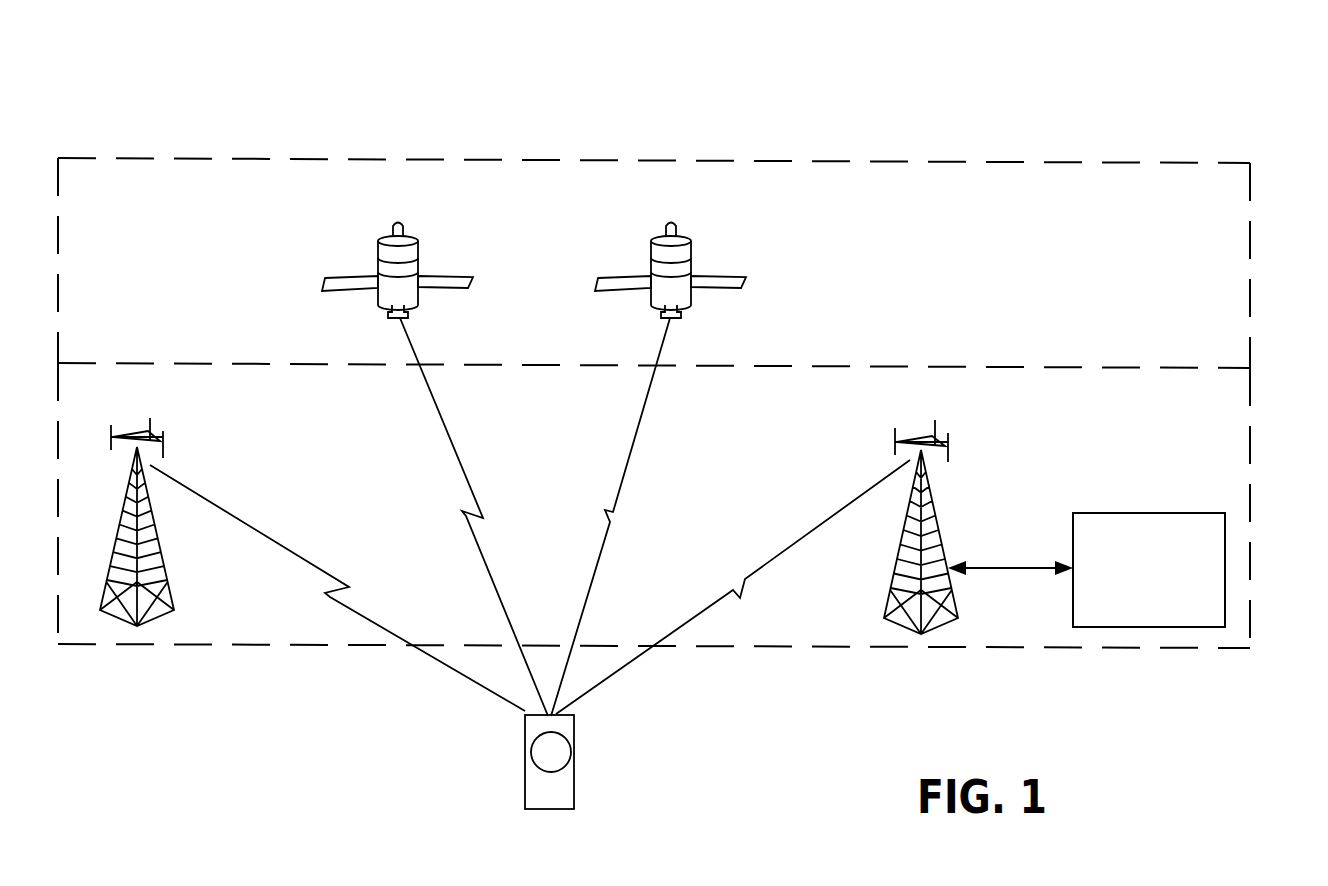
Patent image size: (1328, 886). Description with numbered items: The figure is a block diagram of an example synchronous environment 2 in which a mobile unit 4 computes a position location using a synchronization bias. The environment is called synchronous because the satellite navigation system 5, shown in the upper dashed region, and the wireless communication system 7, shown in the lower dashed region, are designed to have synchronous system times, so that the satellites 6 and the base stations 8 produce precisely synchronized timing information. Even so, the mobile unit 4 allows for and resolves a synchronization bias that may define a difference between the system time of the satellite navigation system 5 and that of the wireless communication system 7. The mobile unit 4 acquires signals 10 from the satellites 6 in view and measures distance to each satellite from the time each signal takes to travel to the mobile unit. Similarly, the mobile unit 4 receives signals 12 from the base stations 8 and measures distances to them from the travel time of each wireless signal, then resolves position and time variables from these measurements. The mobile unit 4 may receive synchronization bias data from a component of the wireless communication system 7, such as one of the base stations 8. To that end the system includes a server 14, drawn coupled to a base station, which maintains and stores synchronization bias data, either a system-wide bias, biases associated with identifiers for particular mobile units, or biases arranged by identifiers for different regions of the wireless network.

The synchronous environment 2 is at (1257, 70).
The mobile unit 4 is at (574, 751).
The satellite navigation system 5 is at (1254, 240).
The satellites 6 is at (406, 229).
The wireless communication system 7 is at (1254, 436).
The base stations 8 is at (166, 456).
The signals 10 is at (417, 356).
The signals 12 is at (311, 562).
The server 14 is at (1163, 598).